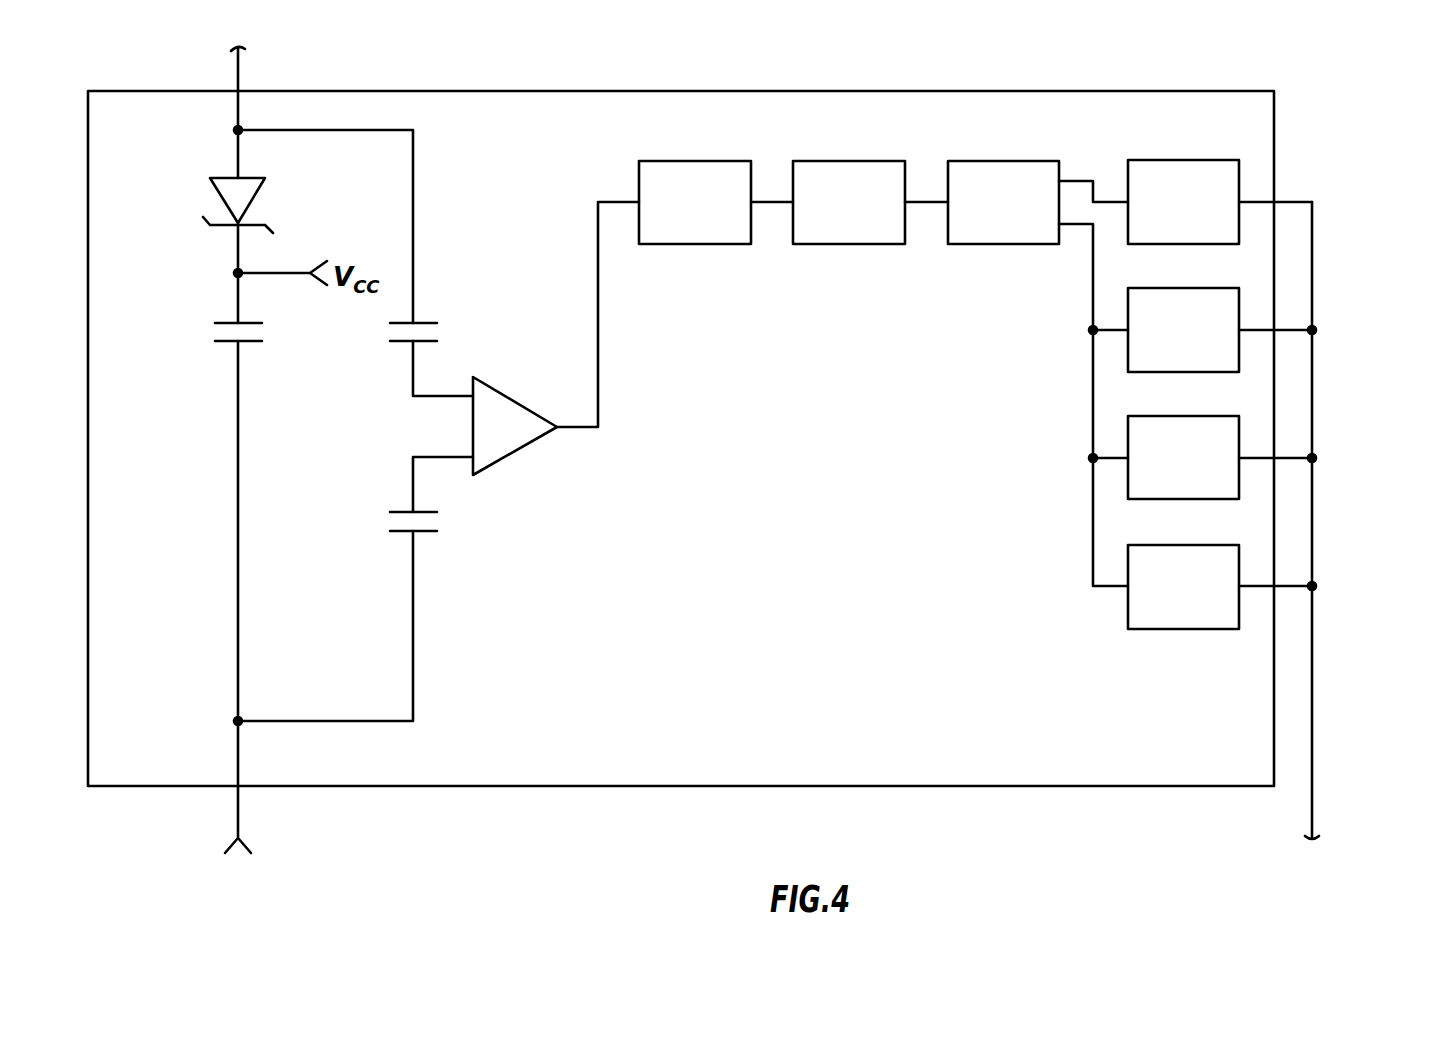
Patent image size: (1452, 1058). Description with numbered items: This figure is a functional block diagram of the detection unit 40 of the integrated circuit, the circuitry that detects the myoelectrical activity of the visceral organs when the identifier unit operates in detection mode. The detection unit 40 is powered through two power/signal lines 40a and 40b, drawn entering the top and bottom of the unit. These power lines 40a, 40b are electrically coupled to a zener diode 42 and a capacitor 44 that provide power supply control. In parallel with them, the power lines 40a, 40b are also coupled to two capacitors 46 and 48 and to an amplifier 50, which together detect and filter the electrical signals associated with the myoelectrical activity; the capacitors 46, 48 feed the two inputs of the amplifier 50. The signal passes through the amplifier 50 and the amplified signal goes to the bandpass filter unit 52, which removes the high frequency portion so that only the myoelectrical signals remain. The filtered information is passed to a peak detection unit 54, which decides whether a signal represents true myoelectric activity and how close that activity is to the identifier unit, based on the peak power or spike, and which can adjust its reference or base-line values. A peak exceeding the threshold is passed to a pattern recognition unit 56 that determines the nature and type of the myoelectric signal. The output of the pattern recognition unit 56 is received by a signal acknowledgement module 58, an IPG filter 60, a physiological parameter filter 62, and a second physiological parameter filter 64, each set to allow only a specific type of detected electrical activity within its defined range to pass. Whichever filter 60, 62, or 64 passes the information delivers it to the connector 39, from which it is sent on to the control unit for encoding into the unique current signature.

The connector 39 is at (1312, 800).
The detection unit 40 is at (1337, 108).
The power/signal line 40a is at (238, 73).
The power/signal line 40b is at (238, 808).
The zener diode 42 is at (217, 191).
The capacitor 44 is at (221, 343).
The capacitor 46 is at (432, 322).
The capacitor 48 is at (428, 532).
The amplifier 50 is at (515, 441).
The bandpass filter unit 52 is at (709, 216).
The peak detection unit 54 is at (863, 216).
The pattern recognition unit 56 is at (1017, 216).
The signal acknowledgement module 58 is at (1198, 216).
The IPG filter 60 is at (1198, 344).
The physiological parameter filter 62 is at (1198, 472).
The second physiological parameter filter 64 is at (1198, 600).